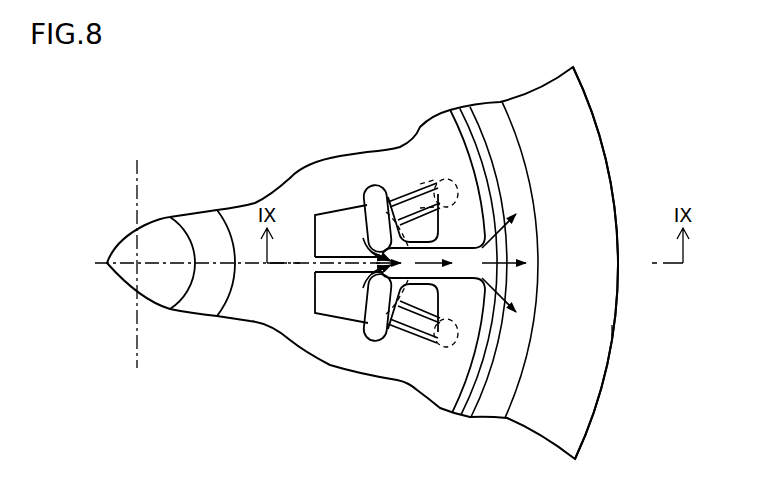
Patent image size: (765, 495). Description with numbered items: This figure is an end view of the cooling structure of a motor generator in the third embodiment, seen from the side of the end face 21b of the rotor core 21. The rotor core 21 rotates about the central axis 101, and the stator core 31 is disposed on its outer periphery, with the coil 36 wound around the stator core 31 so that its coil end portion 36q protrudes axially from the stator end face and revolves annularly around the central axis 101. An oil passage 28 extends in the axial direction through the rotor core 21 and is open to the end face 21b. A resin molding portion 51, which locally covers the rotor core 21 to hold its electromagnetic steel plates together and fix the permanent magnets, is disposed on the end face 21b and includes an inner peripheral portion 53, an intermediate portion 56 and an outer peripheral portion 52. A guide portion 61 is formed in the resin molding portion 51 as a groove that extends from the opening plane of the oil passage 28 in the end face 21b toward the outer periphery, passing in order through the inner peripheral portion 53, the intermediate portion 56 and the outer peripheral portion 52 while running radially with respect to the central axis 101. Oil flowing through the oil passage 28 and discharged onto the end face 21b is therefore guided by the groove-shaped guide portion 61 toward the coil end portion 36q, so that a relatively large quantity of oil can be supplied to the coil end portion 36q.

The end face 21b is at (280, 310).
The central axis 101 is at (133, 266).
The oil passage 28 is at (385, 233).
The outer peripheral portion 52 is at (447, 160).
The inner peripheral portion 53 is at (380, 203).
The guide portion 61 is at (412, 258).
The intermediate portion 56 is at (413, 290).
The resin molding portion 51 is at (471, 368).
The rotor core 21 is at (471, 389).
The coil end portion 36q is at (542, 113).
The coil 36 is at (607, 157).
The stator core 31 is at (626, 336).